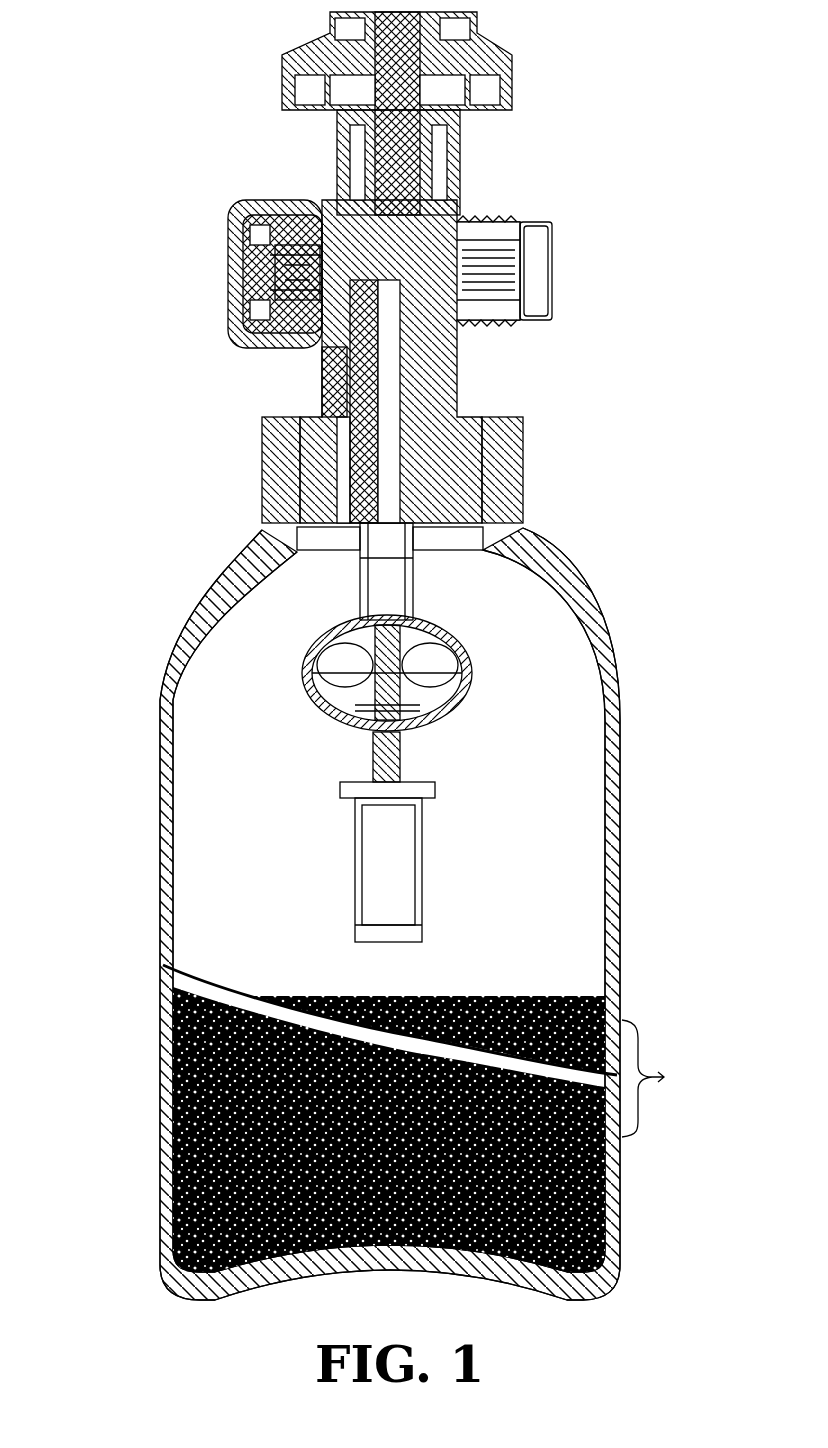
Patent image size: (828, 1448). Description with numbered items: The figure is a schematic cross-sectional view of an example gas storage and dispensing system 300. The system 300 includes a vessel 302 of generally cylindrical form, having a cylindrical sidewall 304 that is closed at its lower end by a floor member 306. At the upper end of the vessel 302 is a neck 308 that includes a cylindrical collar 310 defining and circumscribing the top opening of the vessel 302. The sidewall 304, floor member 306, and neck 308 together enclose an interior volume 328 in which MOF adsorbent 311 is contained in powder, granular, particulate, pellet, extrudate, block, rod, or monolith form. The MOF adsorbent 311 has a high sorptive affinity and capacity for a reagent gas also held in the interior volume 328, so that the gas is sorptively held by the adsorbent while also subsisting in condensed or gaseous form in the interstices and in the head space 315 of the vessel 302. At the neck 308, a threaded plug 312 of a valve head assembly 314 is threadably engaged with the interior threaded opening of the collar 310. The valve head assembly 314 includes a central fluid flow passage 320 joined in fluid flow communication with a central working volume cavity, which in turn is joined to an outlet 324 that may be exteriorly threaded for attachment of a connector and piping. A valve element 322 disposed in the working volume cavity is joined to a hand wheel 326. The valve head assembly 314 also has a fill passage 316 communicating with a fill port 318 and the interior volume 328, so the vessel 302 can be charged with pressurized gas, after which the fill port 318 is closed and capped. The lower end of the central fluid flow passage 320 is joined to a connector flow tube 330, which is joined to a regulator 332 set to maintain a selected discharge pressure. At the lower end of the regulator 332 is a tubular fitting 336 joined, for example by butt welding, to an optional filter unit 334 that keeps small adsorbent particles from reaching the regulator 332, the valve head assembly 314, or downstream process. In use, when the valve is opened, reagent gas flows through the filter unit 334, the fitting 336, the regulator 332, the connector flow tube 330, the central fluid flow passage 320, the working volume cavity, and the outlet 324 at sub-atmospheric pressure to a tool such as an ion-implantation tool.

The gas storage and dispensing system 300 is at (388, 897).
The vessel 302 is at (622, 800).
The cylindrical sidewall 304 is at (160, 752).
The floor member 306 is at (300, 1278).
The neck 308 is at (565, 568).
The cylindrical collar 310 is at (505, 485).
The MOF adsorbent 311 is at (170, 1205).
The threaded plug 312 is at (440, 398).
The valve head assembly 314 is at (322, 362).
The head space 315 is at (220, 840).
The fill passage 316 is at (348, 382).
The fill port 318 is at (240, 238).
The central fluid flow passage 320 is at (395, 360).
The valve element 322 is at (455, 245).
The outlet 324 is at (536, 262).
The hand wheel 326 is at (492, 72).
The interior volume 328 is at (416, 1204).
The connector flow tube 330 is at (360, 578).
The regulator 332 is at (455, 705).
The filter unit 334 is at (412, 870).
The tubular fitting 336 is at (402, 770).